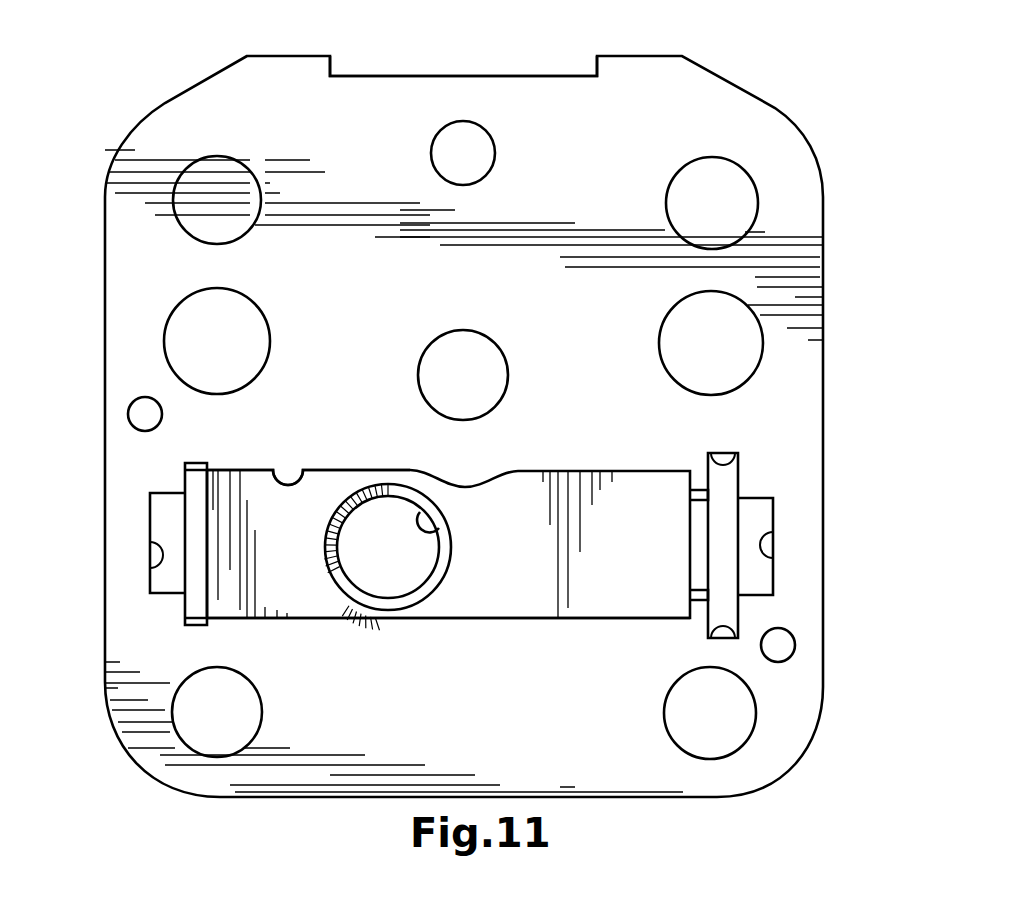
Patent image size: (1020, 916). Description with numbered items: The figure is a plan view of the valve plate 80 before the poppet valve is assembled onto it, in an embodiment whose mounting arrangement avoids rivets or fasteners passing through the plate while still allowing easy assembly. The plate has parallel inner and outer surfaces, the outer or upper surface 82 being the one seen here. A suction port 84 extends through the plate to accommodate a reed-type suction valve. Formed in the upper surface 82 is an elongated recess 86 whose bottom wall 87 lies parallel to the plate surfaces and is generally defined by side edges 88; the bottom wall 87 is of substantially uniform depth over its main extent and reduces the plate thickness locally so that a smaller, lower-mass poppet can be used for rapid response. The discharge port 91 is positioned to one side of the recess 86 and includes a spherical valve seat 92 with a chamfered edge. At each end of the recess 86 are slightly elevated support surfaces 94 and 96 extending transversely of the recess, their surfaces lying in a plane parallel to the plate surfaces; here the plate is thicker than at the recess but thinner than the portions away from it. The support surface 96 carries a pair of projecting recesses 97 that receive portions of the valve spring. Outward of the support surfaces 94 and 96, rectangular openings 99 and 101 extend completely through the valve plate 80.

The valve plate 80 is at (712, 66).
The outer side or surface 82 is at (287, 85).
The suction port 84 is at (485, 338).
The recess 86 is at (300, 468).
The bottom wall 87 is at (514, 576).
The side edges 88 is at (466, 620).
The discharge port 91 is at (439, 530).
The spherical valve seat 92 is at (343, 567).
The support surface 94 is at (200, 507).
The support surface 96 is at (710, 547).
The projecting recesses 97 is at (735, 475).
The rectangular opening 99 is at (152, 544).
The rectangular opening 101 is at (775, 533).